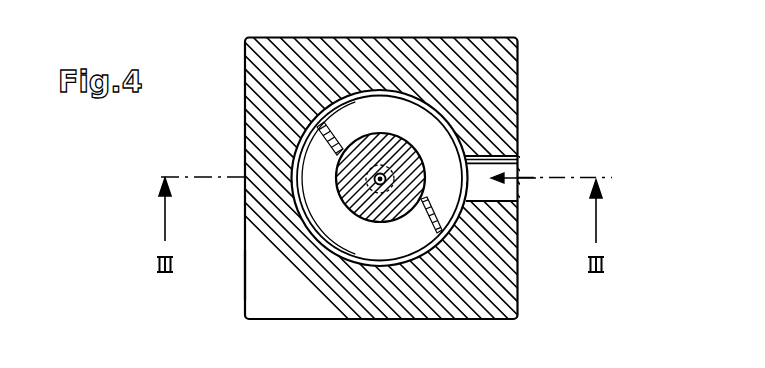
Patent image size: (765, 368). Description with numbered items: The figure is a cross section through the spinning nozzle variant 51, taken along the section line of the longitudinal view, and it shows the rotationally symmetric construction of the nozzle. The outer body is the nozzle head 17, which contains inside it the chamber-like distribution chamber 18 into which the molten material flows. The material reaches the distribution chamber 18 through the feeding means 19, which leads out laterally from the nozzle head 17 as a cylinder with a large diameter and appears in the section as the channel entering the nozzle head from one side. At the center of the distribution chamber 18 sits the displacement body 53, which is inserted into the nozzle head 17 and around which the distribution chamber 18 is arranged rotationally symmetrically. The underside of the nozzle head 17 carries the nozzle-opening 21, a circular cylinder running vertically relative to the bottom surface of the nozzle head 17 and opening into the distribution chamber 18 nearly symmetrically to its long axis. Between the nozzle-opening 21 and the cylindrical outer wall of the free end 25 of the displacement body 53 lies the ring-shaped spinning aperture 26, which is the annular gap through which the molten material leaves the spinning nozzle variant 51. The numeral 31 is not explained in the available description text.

The nozzle head 17 is at (508, 107).
The distribution chamber 18 is at (305, 192).
The feeding means 19 is at (499, 203).
The nozzle-opening 21 is at (366, 212).
The free end of the displacement body 25 is at (384, 176).
The ring-shaped spinning aperture 26 is at (343, 144).
The shaft 31 is at (386, 180).
The spinning nozzle variant 51 is at (242, 281).
The displacement body 53 is at (389, 214).